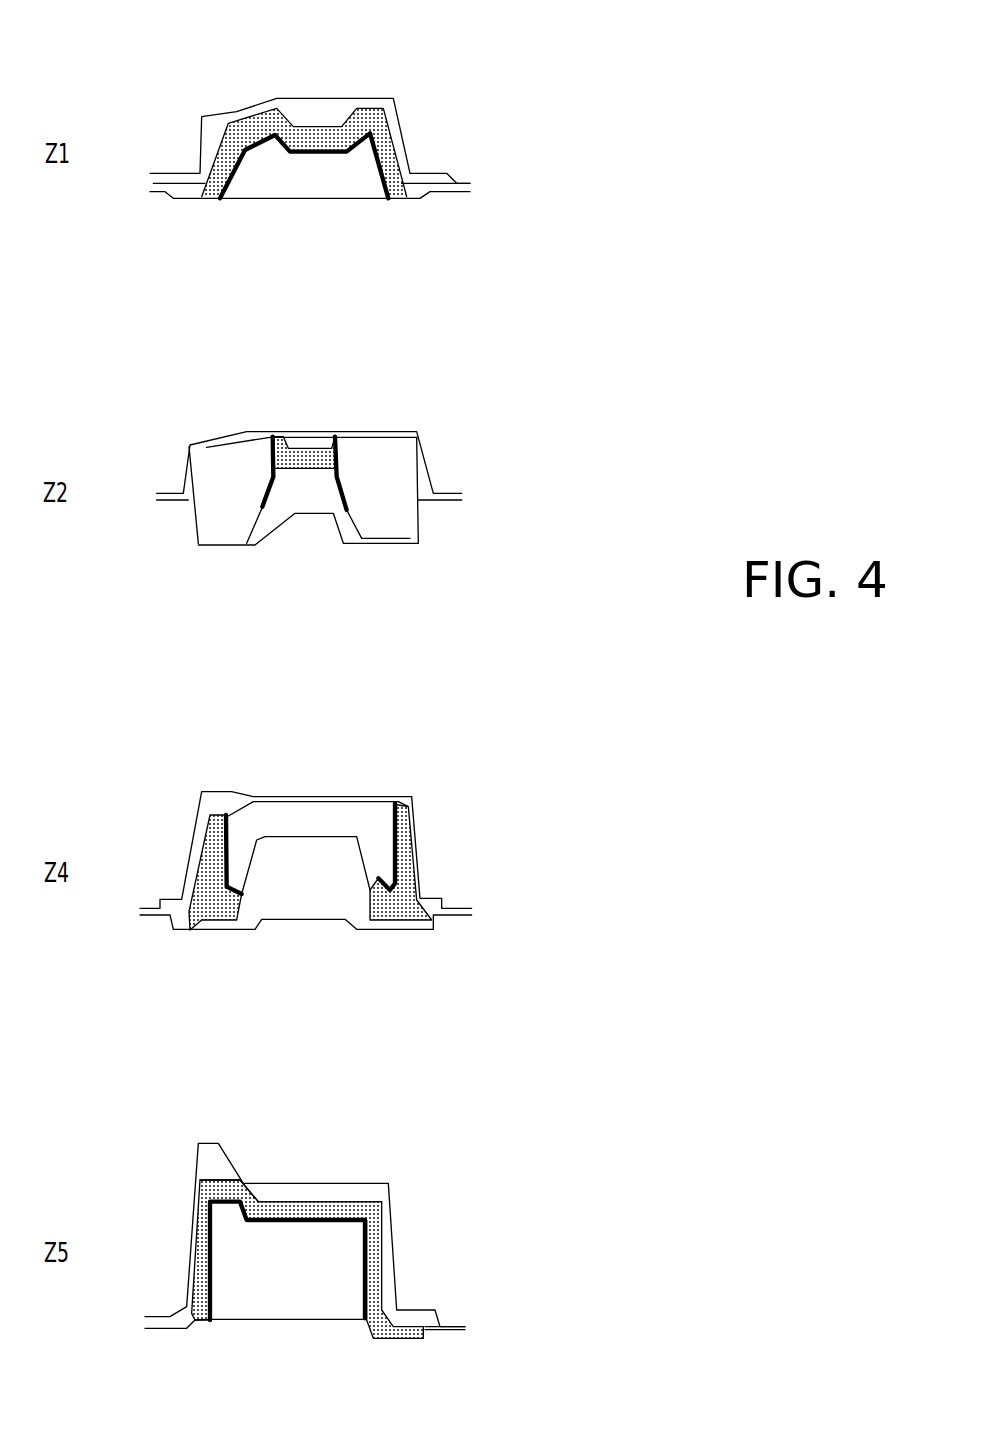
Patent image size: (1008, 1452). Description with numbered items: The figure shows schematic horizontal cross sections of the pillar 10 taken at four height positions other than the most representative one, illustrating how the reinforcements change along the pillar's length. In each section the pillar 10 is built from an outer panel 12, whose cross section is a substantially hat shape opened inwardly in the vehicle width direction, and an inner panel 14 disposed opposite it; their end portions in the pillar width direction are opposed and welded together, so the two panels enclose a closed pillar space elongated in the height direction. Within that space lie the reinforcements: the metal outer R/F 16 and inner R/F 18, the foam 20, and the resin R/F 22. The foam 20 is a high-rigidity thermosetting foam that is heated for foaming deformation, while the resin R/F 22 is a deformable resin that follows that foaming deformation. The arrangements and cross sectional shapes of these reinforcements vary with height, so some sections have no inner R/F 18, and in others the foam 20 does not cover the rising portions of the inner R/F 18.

The pillar 10 is at (455, 238).
The outer panel 12 is at (306, 684).
The inner panel 14 is at (315, 600).
The outer R/F 16 is at (308, 624).
The inner R/F 18 is at (362, 693).
The foam 20 is at (329, 723).
The resin R/F 22 is at (275, 240).